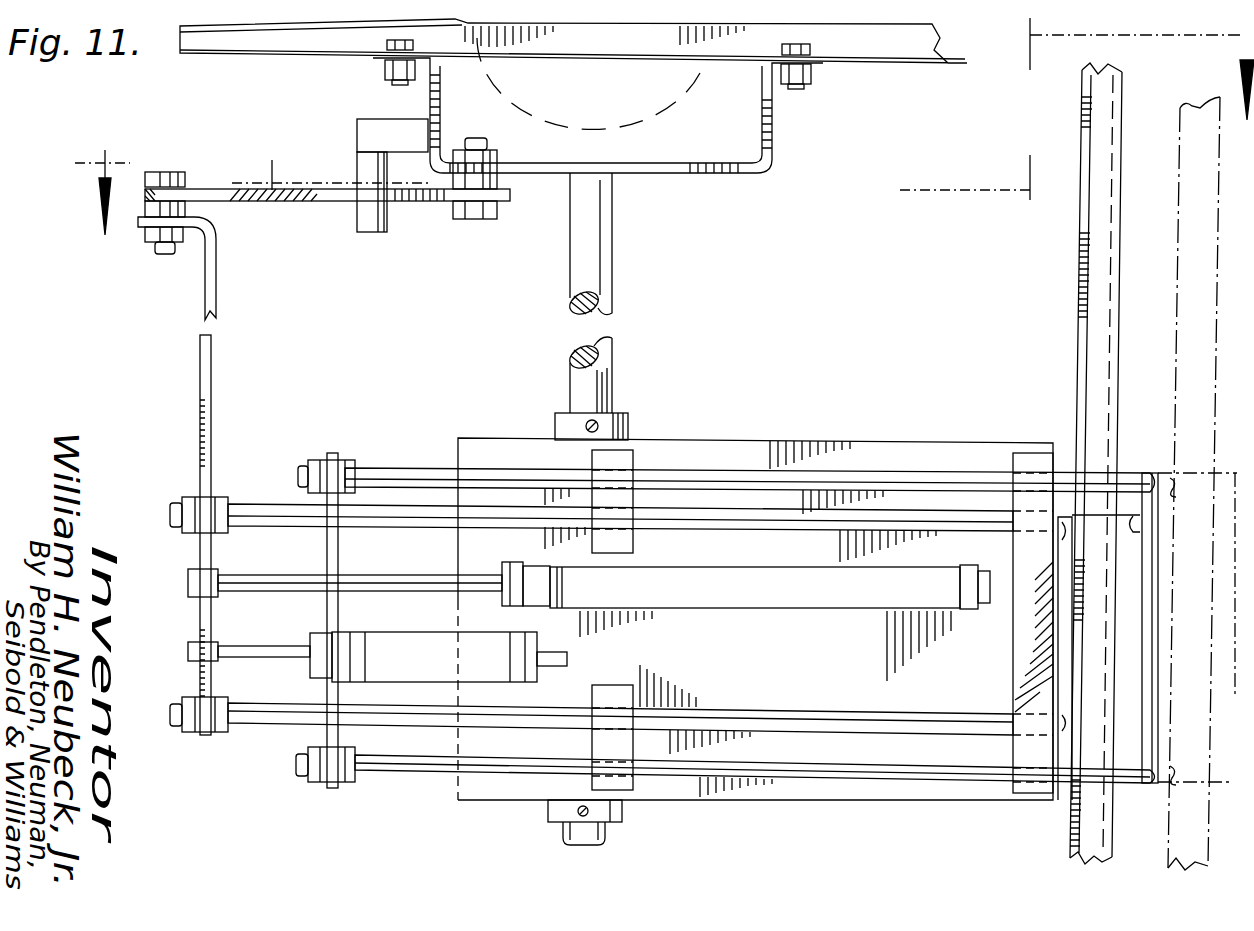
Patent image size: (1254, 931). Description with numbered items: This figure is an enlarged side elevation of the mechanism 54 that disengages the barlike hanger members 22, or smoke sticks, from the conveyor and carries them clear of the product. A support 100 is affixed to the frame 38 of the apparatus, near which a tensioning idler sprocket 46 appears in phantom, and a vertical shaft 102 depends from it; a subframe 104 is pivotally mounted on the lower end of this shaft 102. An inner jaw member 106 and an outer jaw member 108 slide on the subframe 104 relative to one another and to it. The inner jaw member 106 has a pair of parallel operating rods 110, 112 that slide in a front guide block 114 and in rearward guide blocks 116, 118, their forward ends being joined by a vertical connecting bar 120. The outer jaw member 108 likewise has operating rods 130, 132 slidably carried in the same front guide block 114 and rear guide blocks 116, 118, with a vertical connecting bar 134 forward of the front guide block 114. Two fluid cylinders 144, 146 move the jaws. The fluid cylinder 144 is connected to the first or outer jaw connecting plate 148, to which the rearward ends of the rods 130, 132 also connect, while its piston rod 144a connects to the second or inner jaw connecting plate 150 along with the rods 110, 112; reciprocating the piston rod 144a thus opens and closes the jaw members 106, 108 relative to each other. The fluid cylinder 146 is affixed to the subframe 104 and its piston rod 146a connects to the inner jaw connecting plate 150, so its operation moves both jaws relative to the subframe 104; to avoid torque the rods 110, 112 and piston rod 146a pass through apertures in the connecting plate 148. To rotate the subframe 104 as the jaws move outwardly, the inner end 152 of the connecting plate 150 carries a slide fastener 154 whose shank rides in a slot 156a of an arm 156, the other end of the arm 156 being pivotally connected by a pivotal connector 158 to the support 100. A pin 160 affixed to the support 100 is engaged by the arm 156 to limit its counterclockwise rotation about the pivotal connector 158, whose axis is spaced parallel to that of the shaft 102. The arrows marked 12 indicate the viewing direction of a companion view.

The section line 12- 12 is at (664, 119).
The hanger member 22 is at (1100, 310).
The frame 38 is at (918, 37).
The tensioning idler sprocket 46 is at (660, 88).
The mechanism 54 is at (688, 410).
The support 100 is at (772, 130).
The vertical shaft 102 is at (612, 262).
The subframe 104 is at (842, 448).
The inner jaw member 106 is at (925, 515).
The outer jaw member 108 is at (886, 468).
The operating rod 110 is at (722, 522).
The operating rod 112 is at (761, 700).
The front guide block 114 is at (1032, 617).
The rearward guide block 116 is at (630, 545).
The rearward guide block 118 is at (616, 672).
The vertical connecting bar 120 is at (1052, 640).
The operating rod 130 is at (748, 476).
The operating rod 132 is at (808, 768).
The vertical connecting bar 134 is at (1214, 765).
The fluid cylinder 144 is at (419, 622).
The piston rod 144a is at (278, 632).
The fluid cylinder 146 is at (777, 600).
The piston rod 146a is at (278, 560).
The outer jaw connecting plate 148 is at (340, 558).
The inner jaw connecting plate 150 is at (216, 390).
The inner end 152 is at (200, 219).
The slide fastener 154 is at (168, 172).
The arm 156 is at (170, 189).
The slot 156a is at (205, 189).
The pivotal connector 158 is at (478, 222).
The pin 160 is at (357, 225).